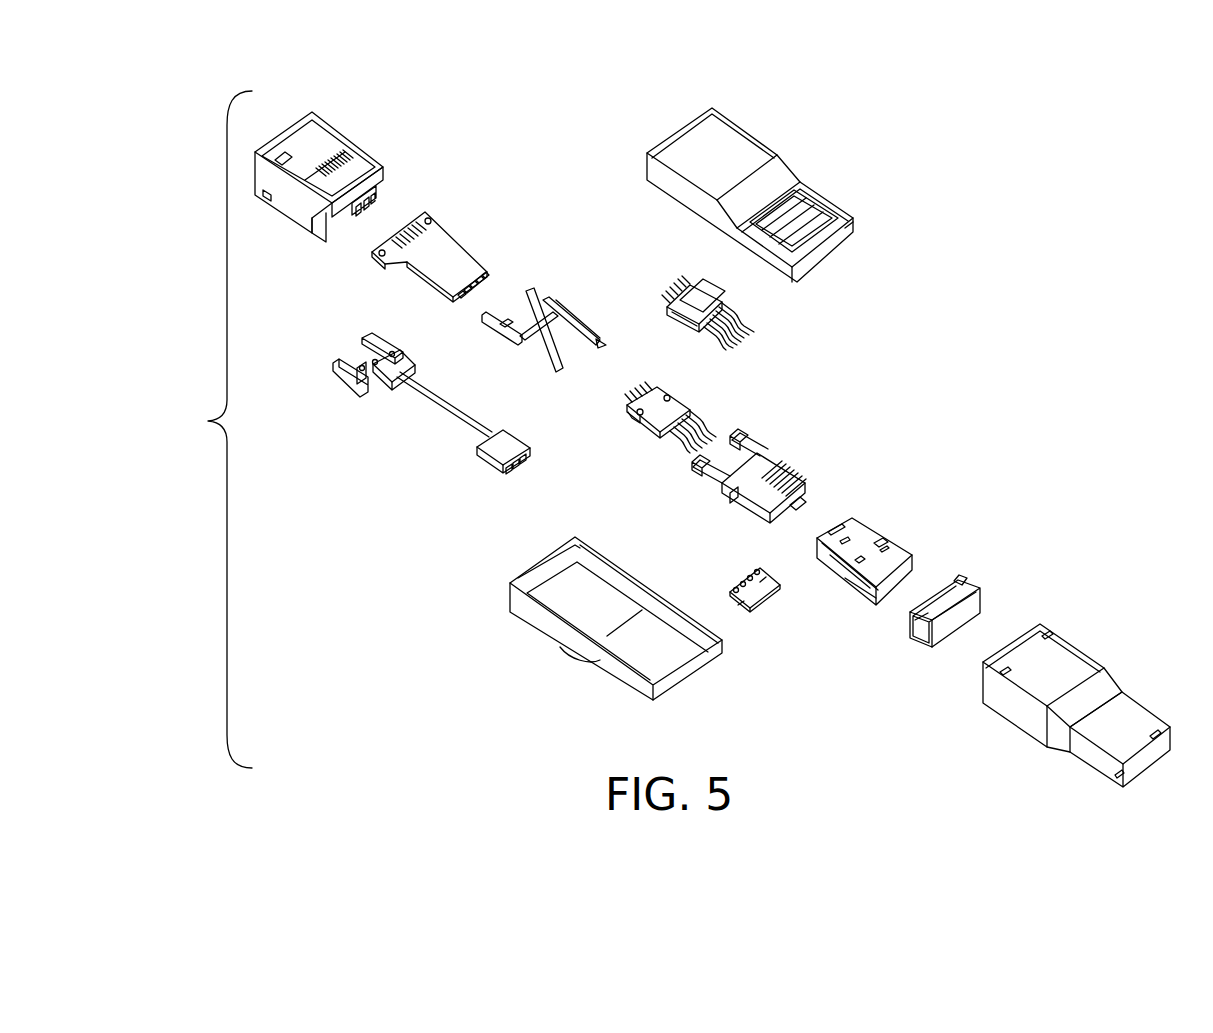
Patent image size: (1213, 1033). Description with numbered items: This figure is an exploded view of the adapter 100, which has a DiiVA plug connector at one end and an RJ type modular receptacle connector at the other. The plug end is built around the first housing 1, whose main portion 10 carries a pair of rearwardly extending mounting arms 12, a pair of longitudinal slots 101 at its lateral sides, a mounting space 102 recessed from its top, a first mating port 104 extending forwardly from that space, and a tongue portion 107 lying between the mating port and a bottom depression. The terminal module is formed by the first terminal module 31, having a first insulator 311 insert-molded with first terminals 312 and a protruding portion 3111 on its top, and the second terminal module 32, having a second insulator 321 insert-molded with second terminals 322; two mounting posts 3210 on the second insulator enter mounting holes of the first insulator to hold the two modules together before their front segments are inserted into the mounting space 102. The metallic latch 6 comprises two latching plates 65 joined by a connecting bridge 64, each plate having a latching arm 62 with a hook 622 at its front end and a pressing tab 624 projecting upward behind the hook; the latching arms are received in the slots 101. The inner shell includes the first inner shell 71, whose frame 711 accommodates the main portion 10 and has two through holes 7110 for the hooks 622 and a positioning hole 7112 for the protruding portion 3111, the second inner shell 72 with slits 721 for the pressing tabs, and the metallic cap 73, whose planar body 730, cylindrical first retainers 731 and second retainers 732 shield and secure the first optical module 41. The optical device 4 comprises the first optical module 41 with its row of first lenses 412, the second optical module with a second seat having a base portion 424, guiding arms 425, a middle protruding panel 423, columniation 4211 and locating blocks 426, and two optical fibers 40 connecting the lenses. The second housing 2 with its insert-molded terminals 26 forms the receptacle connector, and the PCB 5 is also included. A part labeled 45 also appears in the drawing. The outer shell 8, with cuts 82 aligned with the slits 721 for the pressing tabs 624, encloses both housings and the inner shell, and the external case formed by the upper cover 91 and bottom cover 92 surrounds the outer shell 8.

The adapter 100 is at (204, 429).
The second housing 2 is at (344, 167).
The terminals 26 is at (380, 196).
The PCB 5 is at (455, 230).
The metallic latch 6 is at (573, 312).
The connecting bridge 64 is at (530, 325).
The latching plates 65 is at (544, 308).
The pressing tab 624 is at (566, 297).
The hook 622 is at (600, 340).
The latching arm 62 is at (570, 345).
The upper cover 91 is at (787, 141).
The first terminal module 31 is at (739, 306).
The protruding portion 3111 is at (676, 292).
The first insulator 311 is at (688, 320).
The first terminals 312 is at (748, 322).
The second terminal module 32 is at (666, 404).
The second insulator 321 is at (650, 398).
The mounting posts 3210 is at (632, 406).
The second terminals 322 is at (703, 418).
The optical device 4 is at (388, 394).
The optical fibers 40 is at (428, 387).
The first optical module 41 is at (355, 390).
The first lenses 412 is at (500, 474).
The middle protruding panel 423 is at (400, 362).
The base portion 424 is at (372, 358).
The guiding arms 425 is at (370, 340).
The locating blocks 426 is at (393, 350).
The columniation 4211 is at (358, 366).
The pull tab block 45 is at (497, 432).
The first housing 1 is at (757, 467).
The main portion 10 is at (745, 500).
The mounting arms 12 is at (706, 484).
The longitudinal slots 101 is at (728, 497).
The mounting space 102 is at (762, 477).
The first mating port 104 is at (795, 482).
The tongue portion 107 is at (800, 506).
The metallic cap 73 is at (740, 599).
The planar body 730 is at (762, 582).
The first retainers 731 is at (738, 585).
The second retainers 732 is at (745, 604).
The first inner shell 71 is at (905, 560).
The positioning hole 7112 is at (848, 522).
The through holes 7110 is at (892, 542).
The frame 711 is at (862, 582).
The second inner shell 72 is at (981, 586).
The slits 721 is at (962, 578).
The outer shell 8 is at (1086, 698).
The cuts 82 is at (1157, 728).
The bottom cover 92 is at (550, 652).